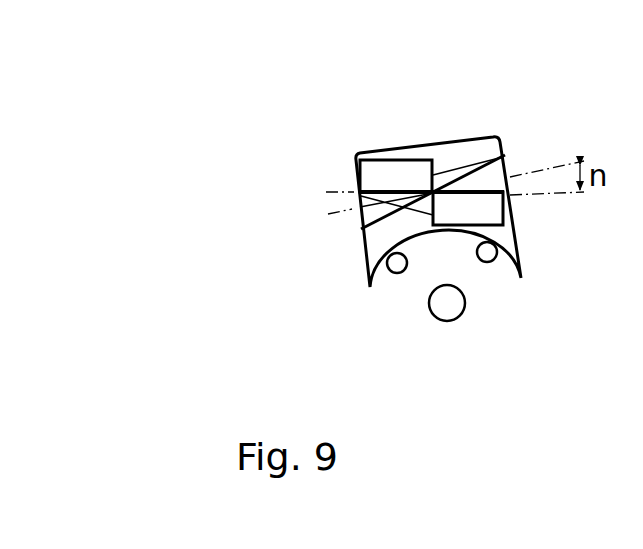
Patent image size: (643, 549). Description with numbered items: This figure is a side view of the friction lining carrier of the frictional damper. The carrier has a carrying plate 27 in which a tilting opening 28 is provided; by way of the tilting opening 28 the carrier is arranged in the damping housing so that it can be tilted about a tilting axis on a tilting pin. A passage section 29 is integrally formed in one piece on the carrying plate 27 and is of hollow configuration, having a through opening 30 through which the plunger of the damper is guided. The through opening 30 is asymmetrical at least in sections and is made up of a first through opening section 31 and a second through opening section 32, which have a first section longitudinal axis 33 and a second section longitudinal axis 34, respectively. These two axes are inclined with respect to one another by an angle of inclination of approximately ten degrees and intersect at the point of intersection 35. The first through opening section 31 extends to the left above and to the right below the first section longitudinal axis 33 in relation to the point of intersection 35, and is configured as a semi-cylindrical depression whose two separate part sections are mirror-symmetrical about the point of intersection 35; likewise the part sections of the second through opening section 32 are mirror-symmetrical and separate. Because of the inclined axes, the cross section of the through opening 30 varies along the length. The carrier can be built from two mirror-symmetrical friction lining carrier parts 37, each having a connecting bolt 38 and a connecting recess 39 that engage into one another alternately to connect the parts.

The carrying plate 27 is at (417, 322).
The tilting opening 28 is at (446, 310).
The passage section 29 is at (507, 160).
The through opening 30 is at (362, 224).
The first through opening section 31 is at (360, 205).
The second through opening section 32 is at (452, 176).
The first section longitudinal axis 33 is at (512, 195).
The second section longitudinal axis 34 is at (545, 168).
The point of intersection 35 is at (435, 193).
The friction lining carrier part 37 is at (458, 139).
The connecting bolt 38 is at (487, 253).
The connecting recess 39 is at (397, 263).